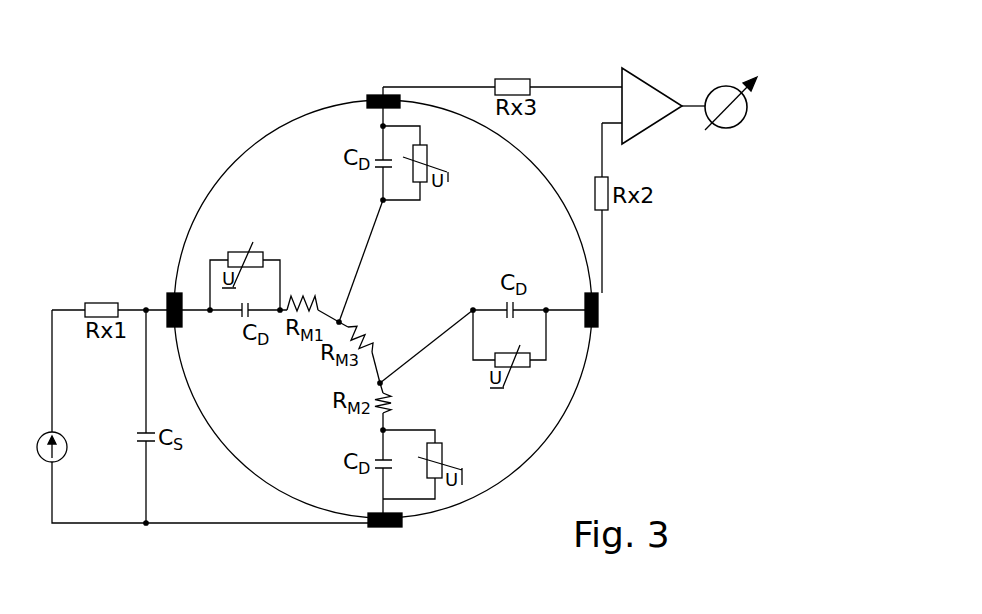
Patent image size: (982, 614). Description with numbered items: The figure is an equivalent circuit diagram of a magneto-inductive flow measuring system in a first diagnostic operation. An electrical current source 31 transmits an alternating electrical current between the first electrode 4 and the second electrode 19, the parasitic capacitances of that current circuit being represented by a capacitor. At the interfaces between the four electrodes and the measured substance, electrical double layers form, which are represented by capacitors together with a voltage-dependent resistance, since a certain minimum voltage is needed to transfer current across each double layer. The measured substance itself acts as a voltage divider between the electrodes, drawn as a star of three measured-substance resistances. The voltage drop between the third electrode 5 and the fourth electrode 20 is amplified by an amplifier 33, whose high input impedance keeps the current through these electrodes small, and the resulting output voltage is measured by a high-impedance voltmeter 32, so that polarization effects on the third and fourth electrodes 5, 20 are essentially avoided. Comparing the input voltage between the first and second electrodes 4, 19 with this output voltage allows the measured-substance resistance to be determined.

The first electrode 4 is at (167, 298).
The third electrode 5 is at (598, 323).
The second electrode 19 is at (388, 527).
The fourth electrode 20 is at (373, 95).
The electrical current source 31 is at (40, 458).
The voltmeter 32 is at (730, 118).
The amplifier 33 is at (645, 92).